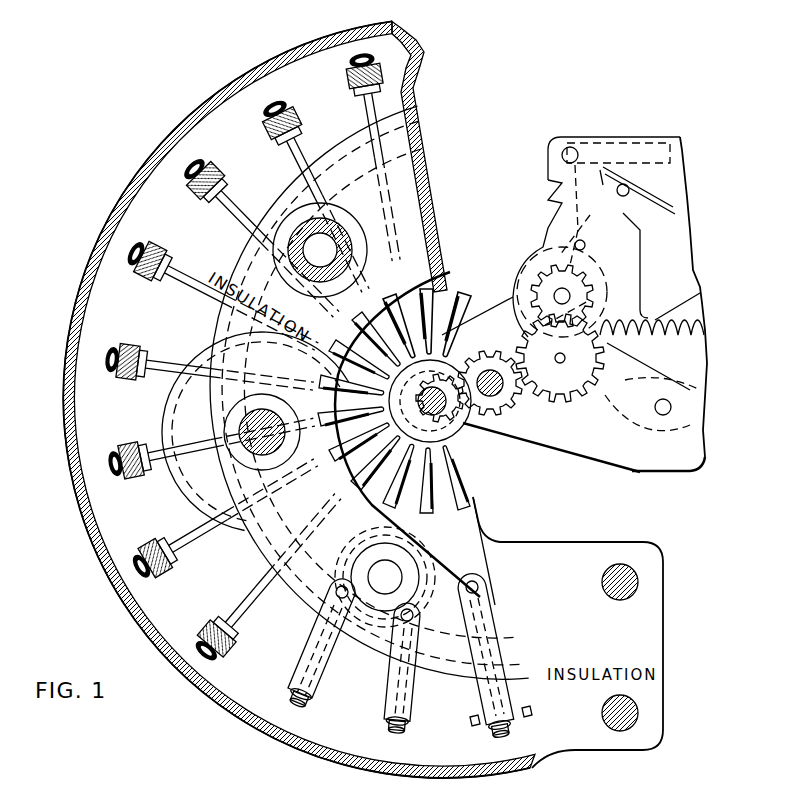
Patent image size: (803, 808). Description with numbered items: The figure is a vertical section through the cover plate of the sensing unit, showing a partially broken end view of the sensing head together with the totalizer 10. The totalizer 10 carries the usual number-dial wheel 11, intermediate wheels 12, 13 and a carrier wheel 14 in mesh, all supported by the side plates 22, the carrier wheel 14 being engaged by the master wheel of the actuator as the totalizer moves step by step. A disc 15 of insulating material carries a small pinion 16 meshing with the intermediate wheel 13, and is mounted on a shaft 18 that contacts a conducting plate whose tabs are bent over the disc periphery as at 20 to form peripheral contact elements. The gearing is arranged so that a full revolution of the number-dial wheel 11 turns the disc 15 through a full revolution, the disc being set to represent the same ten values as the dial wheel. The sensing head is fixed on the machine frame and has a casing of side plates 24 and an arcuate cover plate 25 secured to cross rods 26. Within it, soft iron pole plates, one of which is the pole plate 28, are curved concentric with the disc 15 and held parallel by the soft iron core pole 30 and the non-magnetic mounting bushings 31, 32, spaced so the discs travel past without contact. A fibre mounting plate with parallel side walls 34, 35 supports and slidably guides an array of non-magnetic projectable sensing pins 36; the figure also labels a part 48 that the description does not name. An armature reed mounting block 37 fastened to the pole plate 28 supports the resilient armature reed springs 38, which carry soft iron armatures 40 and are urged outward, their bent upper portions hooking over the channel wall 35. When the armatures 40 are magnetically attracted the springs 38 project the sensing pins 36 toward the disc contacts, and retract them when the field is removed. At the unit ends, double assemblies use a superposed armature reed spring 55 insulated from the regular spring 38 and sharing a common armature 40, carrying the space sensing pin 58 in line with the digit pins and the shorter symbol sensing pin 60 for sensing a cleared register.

The totalizer 10 is at (673, 187).
The number-dial wheel 11 is at (590, 277).
The intermediate wheel 12 is at (540, 357).
The intermediate wheel 13 is at (493, 405).
The carrier wheel 14 is at (630, 457).
The disc 15 is at (465, 433).
The pinion 16 is at (447, 443).
The shaft 18 is at (438, 370).
The peripheral contact element 20 is at (453, 360).
The side plate 22 is at (693, 317).
The side plate 24 is at (138, 207).
The arcuate cover plate 25 is at (180, 123).
The cross rod 26 is at (633, 583).
The pole plate 28 is at (417, 212).
The core pole 30 is at (247, 425).
The mounting bushing 31 is at (340, 228).
The mounting bushing 32 is at (397, 578).
The side wall 34 is at (477, 500).
The side wall 35 is at (513, 667).
The projectable sensing pin 36 is at (447, 487).
The armature reed mounting block 37 is at (362, 663).
The armature reed spring 38 is at (152, 330).
The armature 40 is at (167, 523).
The insulation disc 48 is at (223, 360).
The superposed armature reed spring 55 is at (512, 728).
The space sensing pin 58 is at (430, 333).
The symbol sensing pin 60 is at (440, 302).